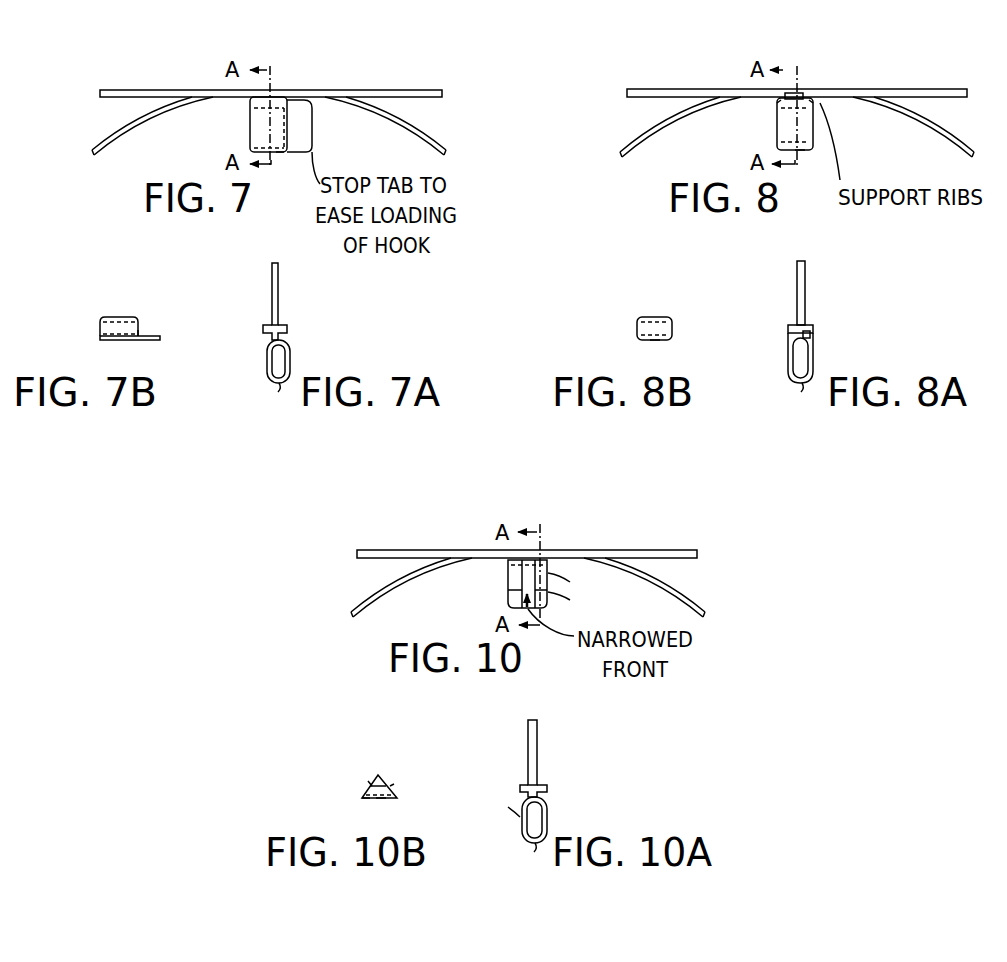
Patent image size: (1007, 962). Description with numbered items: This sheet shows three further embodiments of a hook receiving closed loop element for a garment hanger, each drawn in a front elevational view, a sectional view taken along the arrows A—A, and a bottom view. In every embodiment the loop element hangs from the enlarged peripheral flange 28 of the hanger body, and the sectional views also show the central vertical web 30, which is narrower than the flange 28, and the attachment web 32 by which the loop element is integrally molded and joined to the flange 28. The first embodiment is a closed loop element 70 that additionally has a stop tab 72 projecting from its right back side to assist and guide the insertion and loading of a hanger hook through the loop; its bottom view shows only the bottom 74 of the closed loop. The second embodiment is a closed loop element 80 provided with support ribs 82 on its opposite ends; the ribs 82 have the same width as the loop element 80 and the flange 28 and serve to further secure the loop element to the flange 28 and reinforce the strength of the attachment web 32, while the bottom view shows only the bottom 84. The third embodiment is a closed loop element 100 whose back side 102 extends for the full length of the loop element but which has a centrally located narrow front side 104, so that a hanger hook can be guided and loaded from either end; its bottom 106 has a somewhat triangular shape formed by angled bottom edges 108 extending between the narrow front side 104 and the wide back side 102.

In FIG. 7, the peripheral flange 28 is at (287, 90).
In FIG. 7A, the peripheral flange 28 is at (287, 330).
In FIG. 8, the peripheral flange 28 is at (817, 89).
In FIG. 8A, the peripheral flange 28 is at (813, 328).
In FIG. 10, the peripheral flange 28 is at (547, 551).
In FIG. 10A, the peripheral flange 28 is at (546, 787).
In FIG. 7A, the central vertical web 30 is at (278, 297).
In FIG. 8A, the central vertical web 30 is at (805, 297).
In FIG. 10A, the central vertical web 30 is at (535, 753).
In FIG. 7A, the attachment web 32 is at (282, 336).
In FIG. 8A, the attachment web 32 is at (811, 339).
In FIG. 10A, the attachment web 32 is at (544, 794).
In FIG. 7, the hook receiving closed loop element 70 is at (270, 131).
In FIG. 7B, the hook receiving closed loop element 70 is at (133, 323).
In FIG. 7A, the hook receiving closed loop element 70 is at (280, 339).
In FIG. 7, the stop tab 72 is at (287, 102).
In FIG. 7B, the stop tab 72 is at (140, 335).
In FIG. 7, the bottom of the closed loop 74 is at (276, 152).
In FIG. 7B, the bottom of the closed loop 74 is at (118, 341).
In FIG. 7A, the bottom of the closed loop 74 is at (279, 389).
In FIG. 8, the hook receiving closed loop element 80 is at (797, 119).
In FIG. 8B, the hook receiving closed loop element 80 is at (661, 323).
In FIG. 8A, the hook receiving closed loop element 80 is at (810, 339).
In FIG. 8, the support ribs 82 is at (800, 94).
In FIG. 8A, the support ribs 82 is at (811, 334).
In FIG. 10, the support ribs 82 is at (508, 573).
In FIG. 8, the bottom of the closed loop element 84 is at (800, 151).
In FIG. 8B, the bottom of the closed loop element 84 is at (655, 341).
In FIG. 8A, the bottom of the closed loop element 84 is at (804, 389).
In FIG. 10, the hook receiving closed loop element 100 is at (494, 582).
In FIG. 10B, the hook receiving closed loop element 100 is at (377, 778).
In FIG. 10A, the hook receiving closed loop element 100 is at (538, 798).
In FIG. 10B, the back side 102 is at (363, 800).
In FIG. 10A, the back side 102 is at (547, 822).
In FIG. 10B, the narrow front side 104 is at (378, 775).
In FIG. 10B, the bottom of the closed loop element 106 is at (382, 800).
In FIG. 10A, the bottom of the closed loop element 106 is at (534, 847).
In FIG. 10B, the angled bottom edges 108 is at (368, 781).